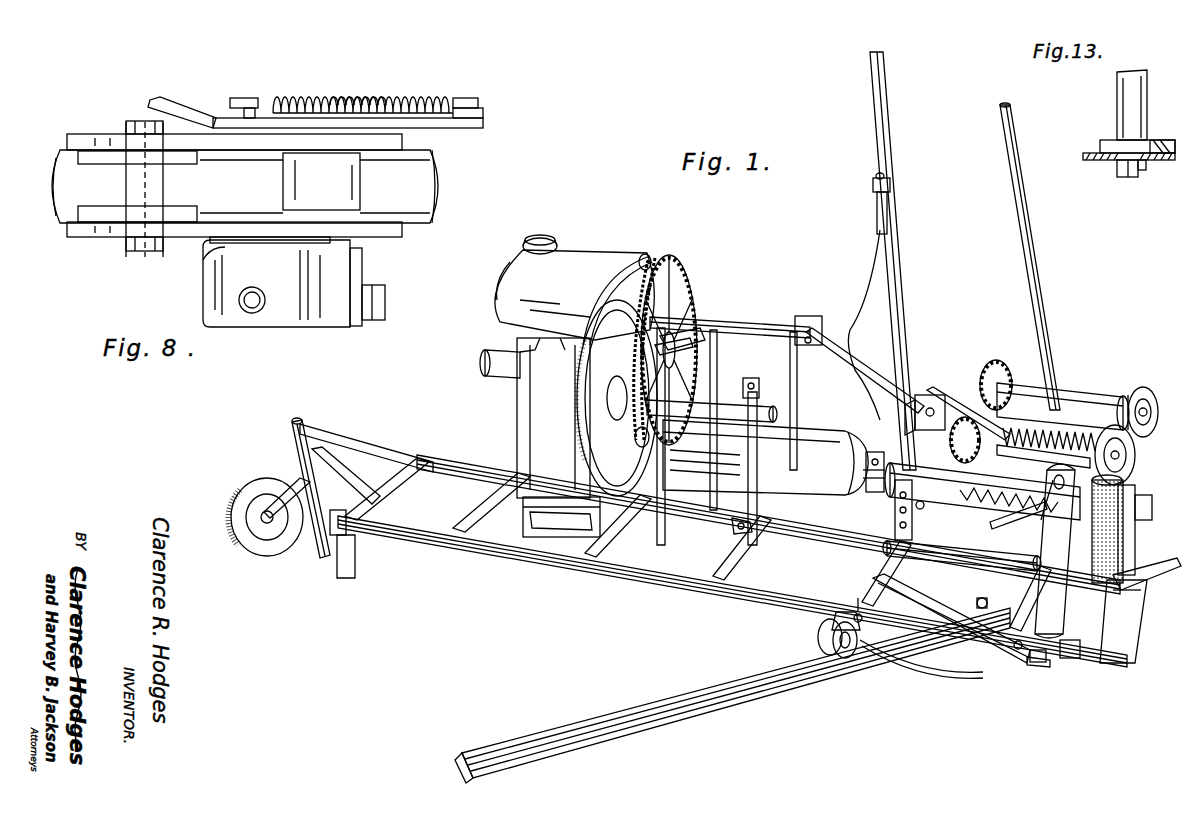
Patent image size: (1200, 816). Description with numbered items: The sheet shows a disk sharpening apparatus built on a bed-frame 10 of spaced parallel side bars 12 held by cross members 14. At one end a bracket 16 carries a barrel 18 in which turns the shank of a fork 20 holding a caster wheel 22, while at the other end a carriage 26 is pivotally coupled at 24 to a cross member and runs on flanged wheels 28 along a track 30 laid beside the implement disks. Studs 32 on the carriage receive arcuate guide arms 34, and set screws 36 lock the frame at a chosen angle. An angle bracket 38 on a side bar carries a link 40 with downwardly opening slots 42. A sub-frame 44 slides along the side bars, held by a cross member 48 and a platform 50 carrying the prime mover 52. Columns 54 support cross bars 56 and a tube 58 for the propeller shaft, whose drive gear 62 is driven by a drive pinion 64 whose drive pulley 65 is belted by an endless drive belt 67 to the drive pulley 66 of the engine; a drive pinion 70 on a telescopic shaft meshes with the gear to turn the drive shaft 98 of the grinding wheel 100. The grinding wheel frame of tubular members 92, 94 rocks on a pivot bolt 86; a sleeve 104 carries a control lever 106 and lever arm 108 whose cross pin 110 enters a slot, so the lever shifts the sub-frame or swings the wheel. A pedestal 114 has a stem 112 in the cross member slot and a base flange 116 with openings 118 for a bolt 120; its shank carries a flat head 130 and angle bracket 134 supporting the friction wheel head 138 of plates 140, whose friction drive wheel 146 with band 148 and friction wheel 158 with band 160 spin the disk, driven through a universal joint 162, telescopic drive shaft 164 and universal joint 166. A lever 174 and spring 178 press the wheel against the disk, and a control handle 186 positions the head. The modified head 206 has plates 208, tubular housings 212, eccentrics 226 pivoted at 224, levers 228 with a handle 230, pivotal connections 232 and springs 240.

In FIG. 1, the bed-frame 10 is at (513, 559).
In FIG. 1, the side bars 12 is at (428, 463).
In FIG. 1, the cross members 14 is at (410, 490).
In FIG. 1, the bracket 16 is at (340, 436).
In FIG. 1, the barrel 18 is at (306, 420).
In FIG. 1, the fork 20 is at (283, 527).
In FIG. 1, the caster wheel 22 is at (247, 496).
In FIG. 1, the pivotal coupling 24 is at (975, 600).
In FIG. 1, the carriage 26 is at (917, 652).
In FIG. 1, the flanged wheels 28 is at (816, 636).
In FIG. 1, the track 30 is at (686, 696).
In FIG. 1, the studs 32 is at (840, 614).
In FIG. 1, the arcuate guide arms 34 is at (940, 682).
In FIG. 1, the set screws 36 is at (858, 612).
In FIG. 1, the angle bracket 38 is at (736, 533).
In FIG. 1, the link 40 is at (810, 525).
In FIG. 1, the slots 42 is at (927, 505).
In FIG. 1, the sub-frame 44 is at (682, 567).
In FIG. 13, the cross member 48 is at (1090, 153).
In FIG. 1, the angle cross member and platform 50 is at (600, 535).
In FIG. 1, the prime mover 52 is at (525, 415).
In FIG. 1, the columns 54 is at (748, 492).
In FIG. 1, the cross bars 56 is at (695, 348).
In FIG. 1, the tube 58 is at (741, 326).
In FIG. 1, the drive gear 62 is at (684, 290).
In FIG. 1, the drive pinion 64 is at (636, 376).
In FIG. 1, the drive pulley 65 is at (605, 326).
In FIG. 1, the drive pulley 66 is at (628, 312).
In FIG. 1, the endless drive belt 67 is at (585, 445).
In FIG. 1, the drive pinion 70 is at (644, 434).
In FIG. 1, the pivot bolt 86 is at (992, 524).
In FIG. 1, the tubular member 92 is at (928, 563).
In FIG. 1, the tubular member 94 is at (947, 478).
In FIG. 1, the drive shaft 98 is at (870, 462).
In FIG. 1, the grinding wheel 100 is at (1125, 548).
In FIG. 1, the sleeve 104 is at (945, 468).
In FIG. 1, the control lever 106 is at (890, 128).
In FIG. 1, the lever arm 108 is at (882, 535).
In FIG. 13, the cross pin 110 is at (1145, 165).
In FIG. 13, the stem 112 is at (1115, 163).
In FIG. 13, the pedestal 114 is at (1145, 90).
In FIG. 1, the pedestal 114 is at (1075, 605).
In FIG. 13, the base flange 116 is at (1112, 140).
In FIG. 1, the base flange 116 is at (1017, 650).
In FIG. 13, the openings 118 is at (1156, 140).
In FIG. 1, the openings 118 is at (1073, 658).
In FIG. 1, the bolt 120 is at (1038, 662).
In FIG. 8, the flat head 130 is at (358, 274).
In FIG. 8, the angle bracket 134 is at (287, 312).
In FIG. 1, the friction wheel carrying head 138 is at (1082, 386).
In FIG. 1, the plates 140 is at (1033, 388).
In FIG. 1, the friction drive wheel 146 is at (1150, 400).
In FIG. 1, the peripheral band 148 is at (1140, 395).
In FIG. 1, the friction wheel 158 is at (1138, 470).
In FIG. 1, the friction band 160 is at (1133, 451).
In FIG. 1, the universal joint 162 is at (918, 393).
In FIG. 1, the telescopic drive shaft 164 is at (857, 373).
In FIG. 1, the universal joint 166 is at (814, 328).
In FIG. 1, the lever 174 is at (947, 394).
In FIG. 1, the retractile coil spring 178 is at (1007, 391).
In FIG. 1, the control handle 186 is at (1042, 268).
In FIG. 8, the head 206 is at (97, 242).
In FIG. 8, the plates 208 is at (83, 137).
In FIG. 8, the tubular housings 212 is at (418, 181).
In FIG. 8, the pivot 224 is at (356, 107).
In FIG. 8, the eccentrics 226 is at (290, 178).
In FIG. 8, the levers 228 is at (289, 118).
In FIG. 8, the handle 230 is at (160, 100).
In FIG. 8, the pivotal connection 232 is at (243, 98).
In FIG. 8, the retractile coil spring 240 is at (388, 97).